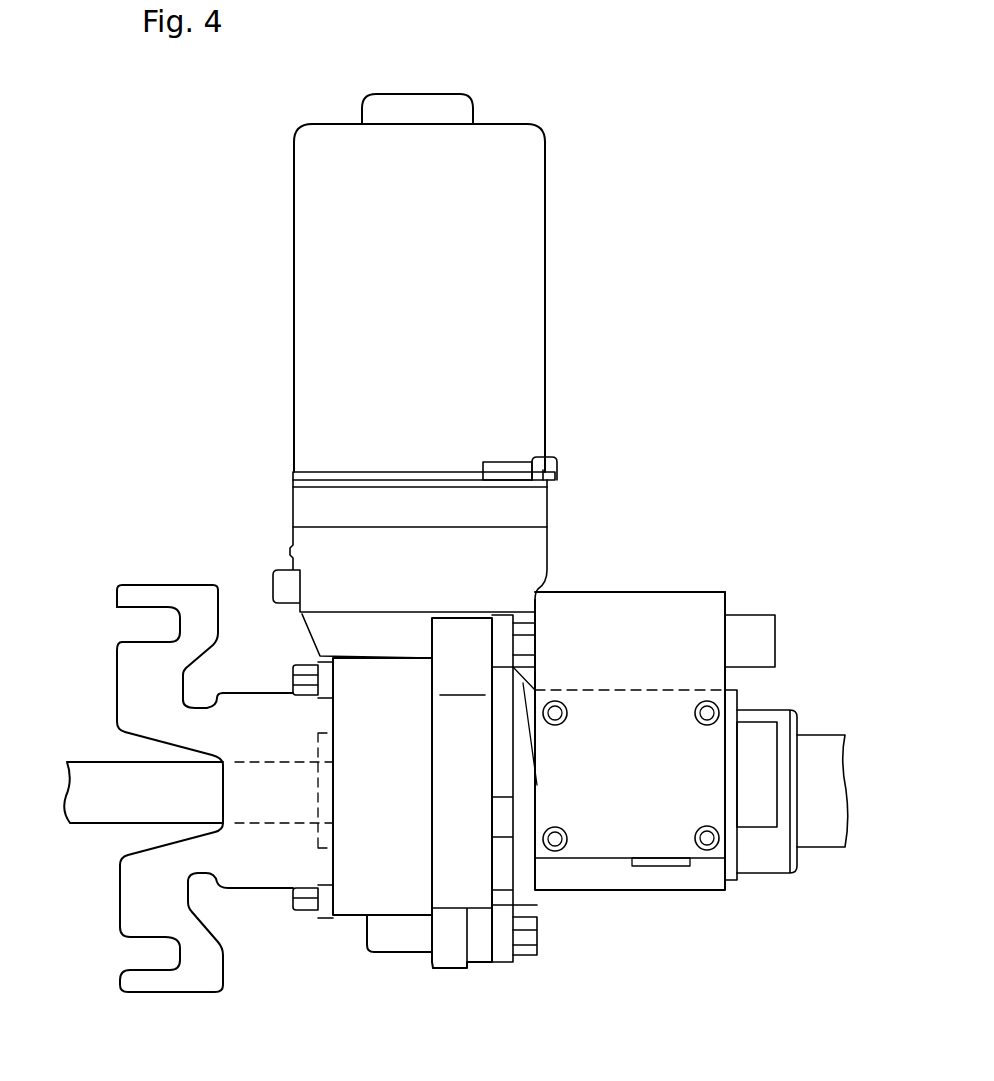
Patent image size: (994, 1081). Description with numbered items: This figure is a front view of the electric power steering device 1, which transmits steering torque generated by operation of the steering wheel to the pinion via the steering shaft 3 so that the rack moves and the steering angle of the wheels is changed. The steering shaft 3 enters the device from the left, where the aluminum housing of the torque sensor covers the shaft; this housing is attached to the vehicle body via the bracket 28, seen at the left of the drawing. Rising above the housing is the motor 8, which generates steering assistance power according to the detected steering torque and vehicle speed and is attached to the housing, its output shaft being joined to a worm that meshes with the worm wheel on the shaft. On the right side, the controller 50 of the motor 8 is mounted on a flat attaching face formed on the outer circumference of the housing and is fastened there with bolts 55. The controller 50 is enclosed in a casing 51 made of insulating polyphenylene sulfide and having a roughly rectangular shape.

The electric power steering device 1 is at (403, 952).
The steering shaft 3 is at (100, 768).
The motor 8 is at (520, 392).
The bracket 28 is at (181, 600).
The controller 50 is at (690, 592).
The casing 51 is at (607, 605).
The bolts 55 is at (708, 835).